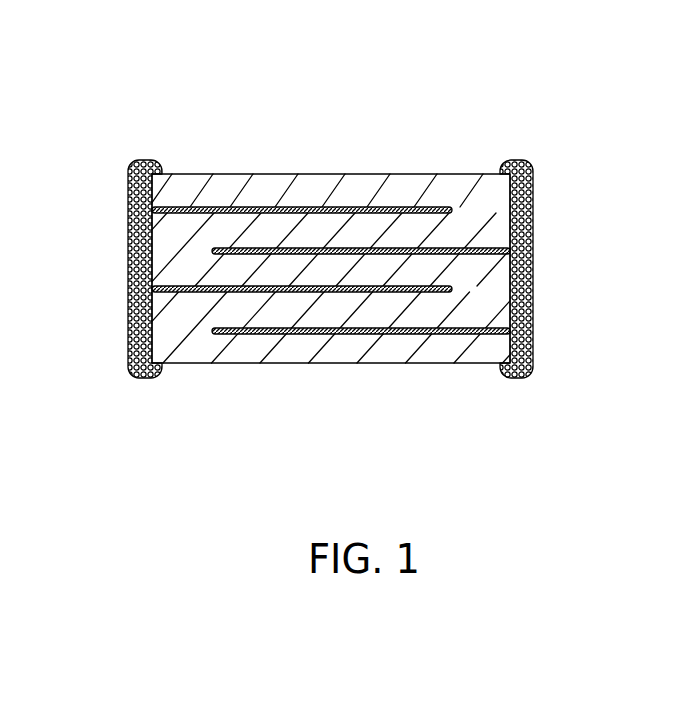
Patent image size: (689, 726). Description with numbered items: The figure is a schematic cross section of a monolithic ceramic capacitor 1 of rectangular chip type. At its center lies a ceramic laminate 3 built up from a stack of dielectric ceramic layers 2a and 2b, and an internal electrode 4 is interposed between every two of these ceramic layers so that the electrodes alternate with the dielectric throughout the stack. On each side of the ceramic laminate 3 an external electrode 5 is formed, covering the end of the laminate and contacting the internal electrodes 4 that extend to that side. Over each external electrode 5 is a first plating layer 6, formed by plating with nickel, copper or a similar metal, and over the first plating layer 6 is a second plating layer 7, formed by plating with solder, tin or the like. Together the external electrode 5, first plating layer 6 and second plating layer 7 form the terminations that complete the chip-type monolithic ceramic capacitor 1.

The monolithic ceramic capacitor 1 is at (78, 52).
The dielectric ceramic layer 2a is at (371, 188).
The dielectric ceramic layer 2b is at (422, 230).
The ceramic laminate 3 is at (267, 166).
The internal electrode 4 is at (196, 208).
The external electrode 5 is at (128, 203).
The first plating layer 6 is at (130, 265).
The second plating layer 7 is at (130, 322).